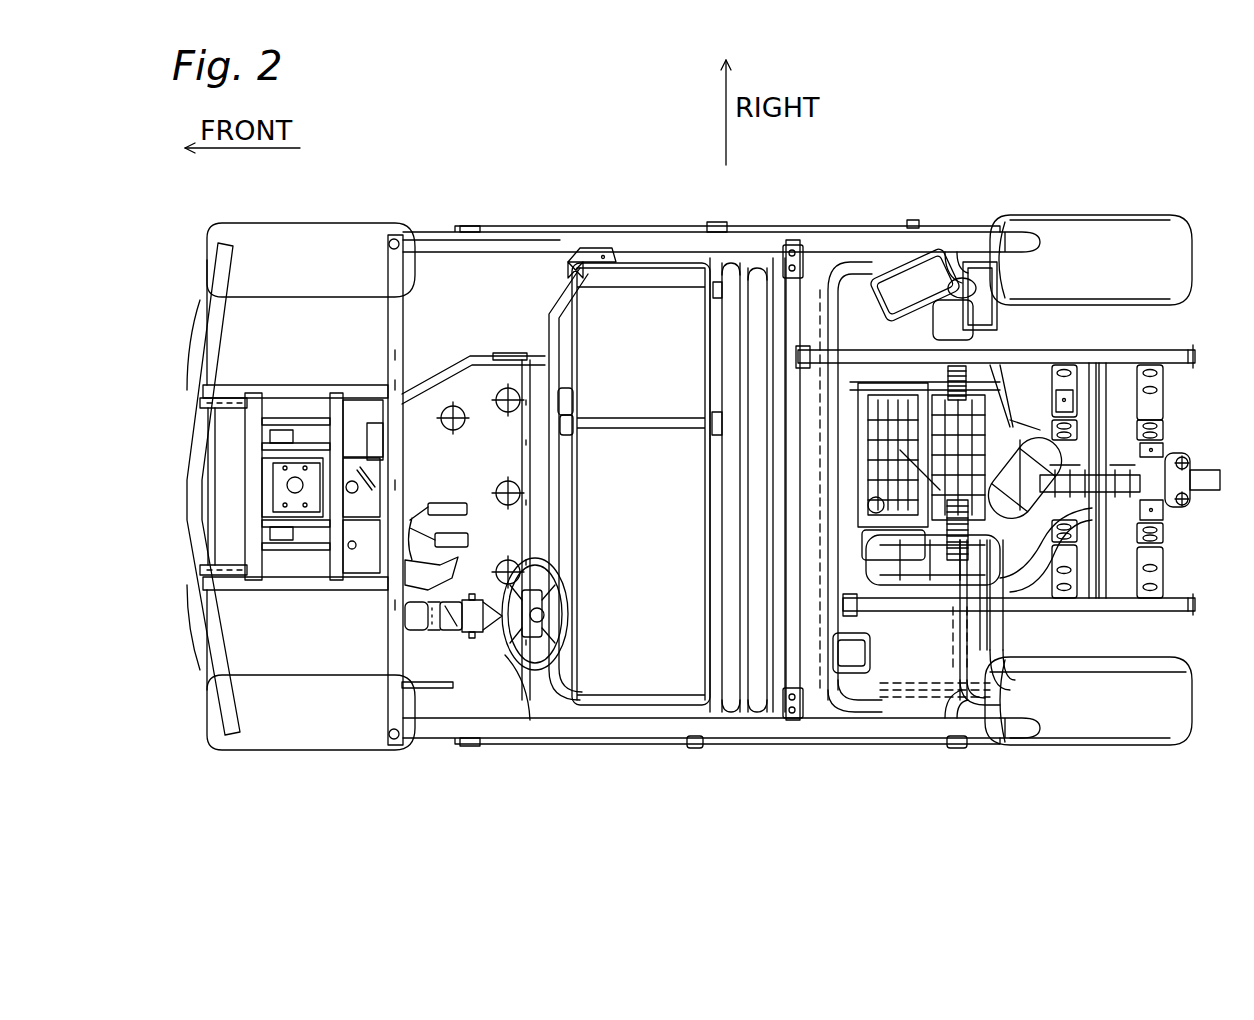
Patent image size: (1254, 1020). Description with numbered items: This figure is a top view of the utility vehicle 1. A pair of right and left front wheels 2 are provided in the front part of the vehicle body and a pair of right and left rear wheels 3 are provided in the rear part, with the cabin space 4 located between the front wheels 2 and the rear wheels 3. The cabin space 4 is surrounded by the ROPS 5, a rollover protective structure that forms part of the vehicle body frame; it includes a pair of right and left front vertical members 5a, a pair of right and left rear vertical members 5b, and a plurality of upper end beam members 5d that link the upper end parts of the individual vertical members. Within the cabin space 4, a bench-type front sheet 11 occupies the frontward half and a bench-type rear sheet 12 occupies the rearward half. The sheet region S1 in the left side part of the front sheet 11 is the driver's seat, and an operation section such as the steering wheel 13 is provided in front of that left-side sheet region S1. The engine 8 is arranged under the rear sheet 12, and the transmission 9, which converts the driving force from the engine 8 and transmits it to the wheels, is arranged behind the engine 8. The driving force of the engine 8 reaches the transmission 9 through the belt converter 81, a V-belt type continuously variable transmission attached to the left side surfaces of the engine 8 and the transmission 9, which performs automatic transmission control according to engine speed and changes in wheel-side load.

The utility vehicle 1 is at (703, 452).
The front wheels 2 is at (335, 257).
The rear wheels 3 is at (1148, 253).
The cabin space 4 is at (815, 285).
The ROPS 5 is at (723, 465).
The front vertical members 5a is at (403, 230).
The rear vertical members 5b is at (1030, 232).
The upper end beam members 5d is at (661, 243).
The engine 8 is at (962, 545).
The belt converter 81 is at (958, 563).
The transmission 9 is at (1095, 482).
The front sheet 11 is at (641, 667).
The rear sheet 12 is at (887, 680).
The steering wheel 13 is at (533, 713).
The sheet region S1 is at (554, 692).